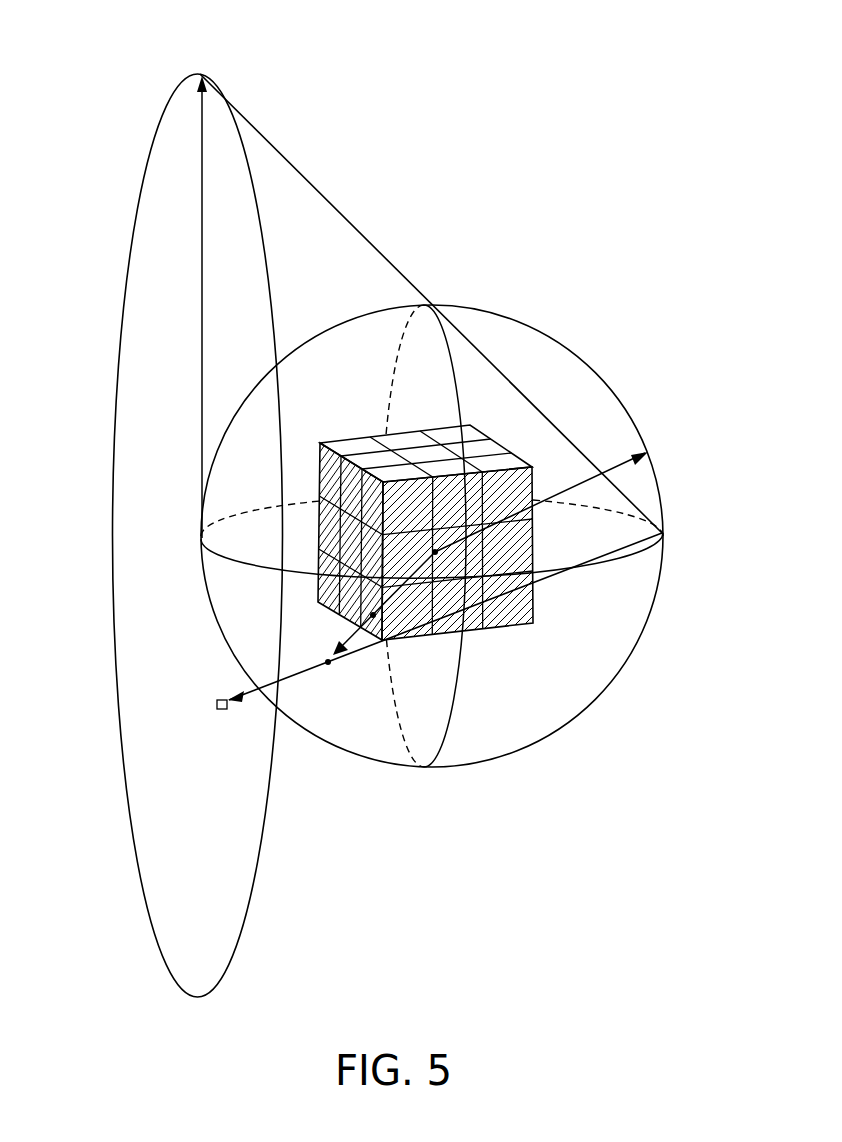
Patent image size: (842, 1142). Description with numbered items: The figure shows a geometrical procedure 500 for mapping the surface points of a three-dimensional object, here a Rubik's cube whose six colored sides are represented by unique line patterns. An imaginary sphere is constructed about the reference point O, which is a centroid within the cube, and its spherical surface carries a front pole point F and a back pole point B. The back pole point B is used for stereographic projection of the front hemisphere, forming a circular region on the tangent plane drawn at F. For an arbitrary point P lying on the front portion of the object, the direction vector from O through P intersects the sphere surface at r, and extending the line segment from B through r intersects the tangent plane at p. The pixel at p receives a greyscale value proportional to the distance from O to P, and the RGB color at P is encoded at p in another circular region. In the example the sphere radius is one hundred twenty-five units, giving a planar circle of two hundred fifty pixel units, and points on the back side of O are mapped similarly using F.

The spherical camera model / projection geometry 500 is at (111, 41).
The front pole point F is at (248, 525).
The back pole point B is at (610, 523).
The reference point O is at (540, 503).
The arbitrary point P is at (367, 602).
The intersection point r is at (377, 608).
The pixel point p is at (428, 627).